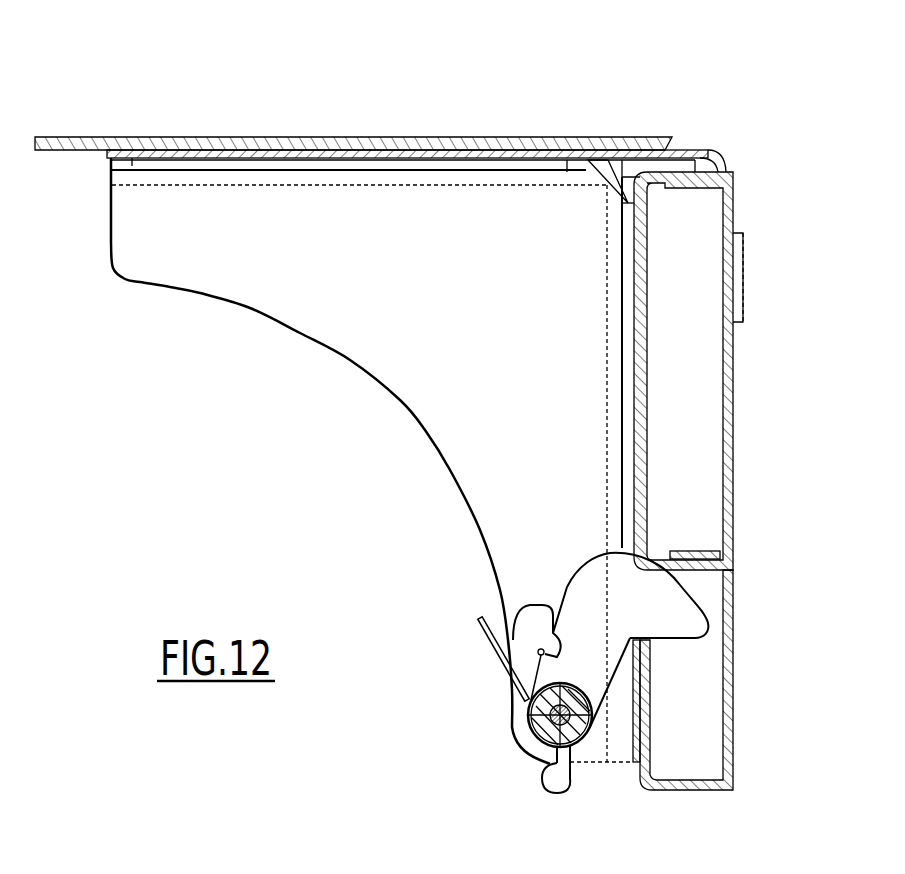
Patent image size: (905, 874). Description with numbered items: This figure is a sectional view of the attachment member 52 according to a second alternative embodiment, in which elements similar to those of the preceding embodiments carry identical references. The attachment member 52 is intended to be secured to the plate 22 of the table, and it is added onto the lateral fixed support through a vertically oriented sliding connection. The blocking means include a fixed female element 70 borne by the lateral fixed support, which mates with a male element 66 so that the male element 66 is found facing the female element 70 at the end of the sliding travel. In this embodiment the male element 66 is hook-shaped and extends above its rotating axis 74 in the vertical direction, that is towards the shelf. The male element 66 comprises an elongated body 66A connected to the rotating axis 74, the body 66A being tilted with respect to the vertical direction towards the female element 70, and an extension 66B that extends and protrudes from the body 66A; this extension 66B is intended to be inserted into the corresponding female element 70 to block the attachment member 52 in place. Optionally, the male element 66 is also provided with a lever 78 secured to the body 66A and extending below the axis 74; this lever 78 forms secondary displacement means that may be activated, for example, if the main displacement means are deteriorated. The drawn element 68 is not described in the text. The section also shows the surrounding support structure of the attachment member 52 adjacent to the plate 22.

The attachment member 52 is at (160, 75).
The plate 22 is at (328, 152).
The male element 66 is at (582, 568).
The elongated body 66A is at (595, 677).
The extension 66B is at (670, 600).
The lever 68 is at (500, 657).
The female element 70 is at (657, 645).
The rotating axis 74 is at (530, 740).
The lever 78 is at (562, 783).